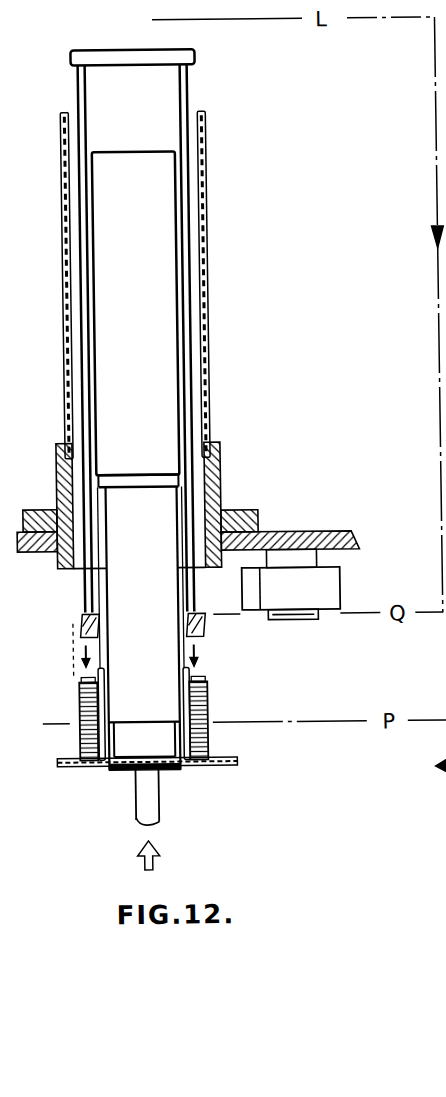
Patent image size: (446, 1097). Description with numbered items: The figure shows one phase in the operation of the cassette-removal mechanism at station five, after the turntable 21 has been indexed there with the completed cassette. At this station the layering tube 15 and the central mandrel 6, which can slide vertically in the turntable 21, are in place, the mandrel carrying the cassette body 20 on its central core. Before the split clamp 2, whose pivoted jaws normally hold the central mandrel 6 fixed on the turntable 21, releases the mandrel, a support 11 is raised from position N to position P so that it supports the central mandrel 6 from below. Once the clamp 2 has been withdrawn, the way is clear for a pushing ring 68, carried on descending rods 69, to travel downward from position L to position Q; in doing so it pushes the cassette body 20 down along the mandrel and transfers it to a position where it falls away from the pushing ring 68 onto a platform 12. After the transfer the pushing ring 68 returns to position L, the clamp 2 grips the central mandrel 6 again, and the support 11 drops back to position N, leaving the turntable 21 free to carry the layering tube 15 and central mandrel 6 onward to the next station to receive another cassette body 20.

The descending rods 69 is at (191, 206).
The layering tube 15 is at (208, 358).
The turntable 21 is at (324, 540).
The split clamp 2 is at (320, 594).
The pushing ring 68 is at (72, 624).
The central mandrel 6 is at (122, 695).
The cassette body 20 is at (203, 706).
The platform 12 is at (226, 768).
The support 11 is at (147, 800).